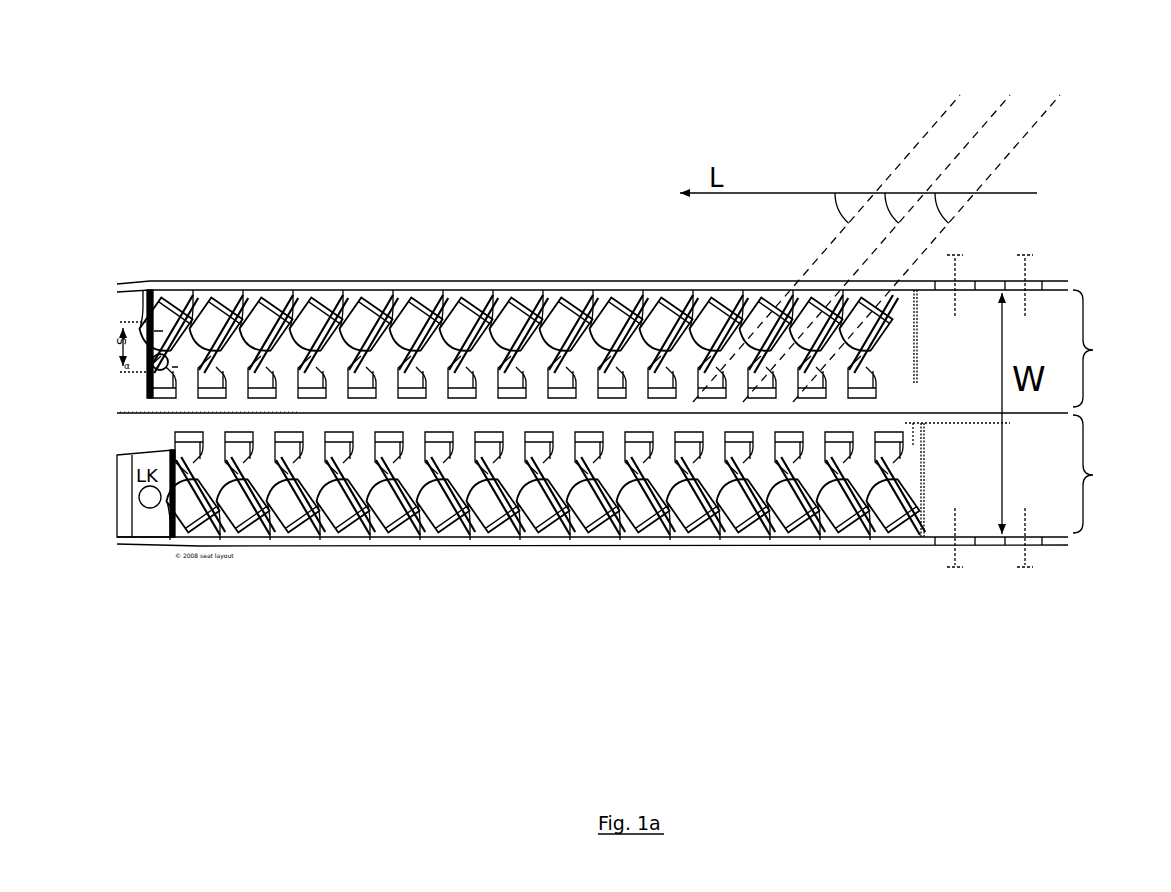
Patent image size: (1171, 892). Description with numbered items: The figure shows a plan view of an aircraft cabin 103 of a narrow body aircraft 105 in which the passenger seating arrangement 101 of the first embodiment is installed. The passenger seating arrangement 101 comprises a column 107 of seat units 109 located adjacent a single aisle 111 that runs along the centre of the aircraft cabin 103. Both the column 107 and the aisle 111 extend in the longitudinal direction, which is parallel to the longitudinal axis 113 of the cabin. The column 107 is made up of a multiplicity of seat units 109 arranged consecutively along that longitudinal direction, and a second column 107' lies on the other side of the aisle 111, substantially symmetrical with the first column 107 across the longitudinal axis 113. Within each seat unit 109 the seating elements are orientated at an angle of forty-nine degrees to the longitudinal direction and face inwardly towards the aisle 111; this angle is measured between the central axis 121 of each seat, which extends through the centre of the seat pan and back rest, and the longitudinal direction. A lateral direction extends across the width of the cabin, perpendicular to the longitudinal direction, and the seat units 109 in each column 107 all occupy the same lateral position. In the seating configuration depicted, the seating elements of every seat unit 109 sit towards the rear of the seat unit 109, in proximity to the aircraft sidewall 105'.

The passenger seating arrangement 101 is at (355, 249).
The aircraft cabin 103 is at (125, 403).
The narrow body aircraft 105 is at (177, 277).
The aircraft sidewall 105' is at (668, 268).
The column 107 is at (1116, 348).
The second column 107' is at (1118, 474).
The seat unit 109 is at (619, 277).
The aisle 111 is at (190, 416).
The longitudinal axis 113 is at (932, 410).
The central axis 121 is at (1037, 122).